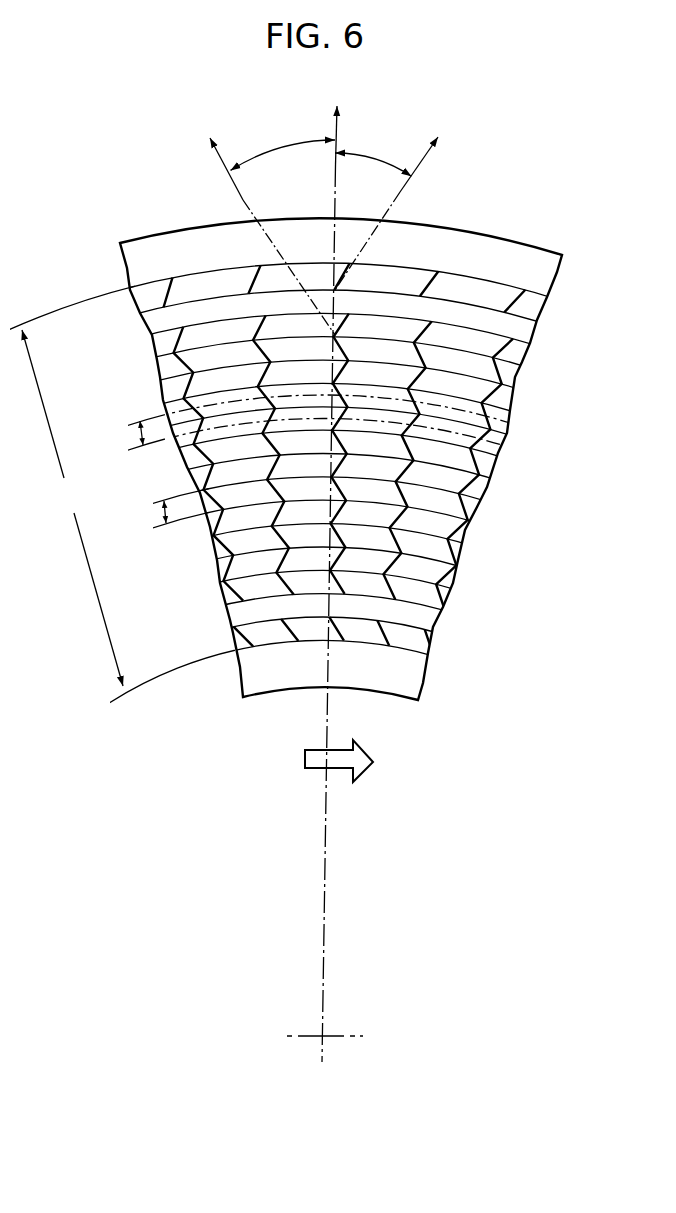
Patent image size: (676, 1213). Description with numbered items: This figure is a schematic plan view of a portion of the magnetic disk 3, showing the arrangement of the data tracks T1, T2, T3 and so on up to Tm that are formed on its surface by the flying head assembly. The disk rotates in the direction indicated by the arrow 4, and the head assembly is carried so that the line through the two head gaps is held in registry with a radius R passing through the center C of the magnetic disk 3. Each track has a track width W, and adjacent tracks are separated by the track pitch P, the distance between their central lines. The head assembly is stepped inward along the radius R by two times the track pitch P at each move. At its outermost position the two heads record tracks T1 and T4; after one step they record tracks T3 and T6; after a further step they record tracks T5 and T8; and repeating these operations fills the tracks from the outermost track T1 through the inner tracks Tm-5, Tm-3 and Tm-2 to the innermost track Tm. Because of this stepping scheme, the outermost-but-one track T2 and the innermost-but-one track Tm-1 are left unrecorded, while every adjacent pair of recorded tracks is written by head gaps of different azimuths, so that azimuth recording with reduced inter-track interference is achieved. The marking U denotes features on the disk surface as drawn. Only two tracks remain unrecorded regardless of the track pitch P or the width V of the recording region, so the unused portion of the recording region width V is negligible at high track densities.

The magnetic disk 3 is at (536, 250).
The arrow 4 is at (312, 768).
The tread unit / sipe U is at (155, 297).
The track T1 is at (527, 307).
The track T2 is at (522, 330).
The track T3 is at (517, 350).
The track T4 is at (163, 366).
The track T5 is at (505, 395).
The track T6 is at (162, 405).
The track T8 is at (188, 457).
The track Tm-5 is at (447, 527).
The track Tm-3 is at (437, 573).
The track Tm-2 is at (222, 593).
The track Tm-1 is at (430, 618).
The track Tm is at (233, 638).
The track pitch P is at (338, 804).
The track width W is at (338, 845).
The width of the recording region V is at (338, 738).
The radius R is at (325, 886).
The center C is at (325, 1035).